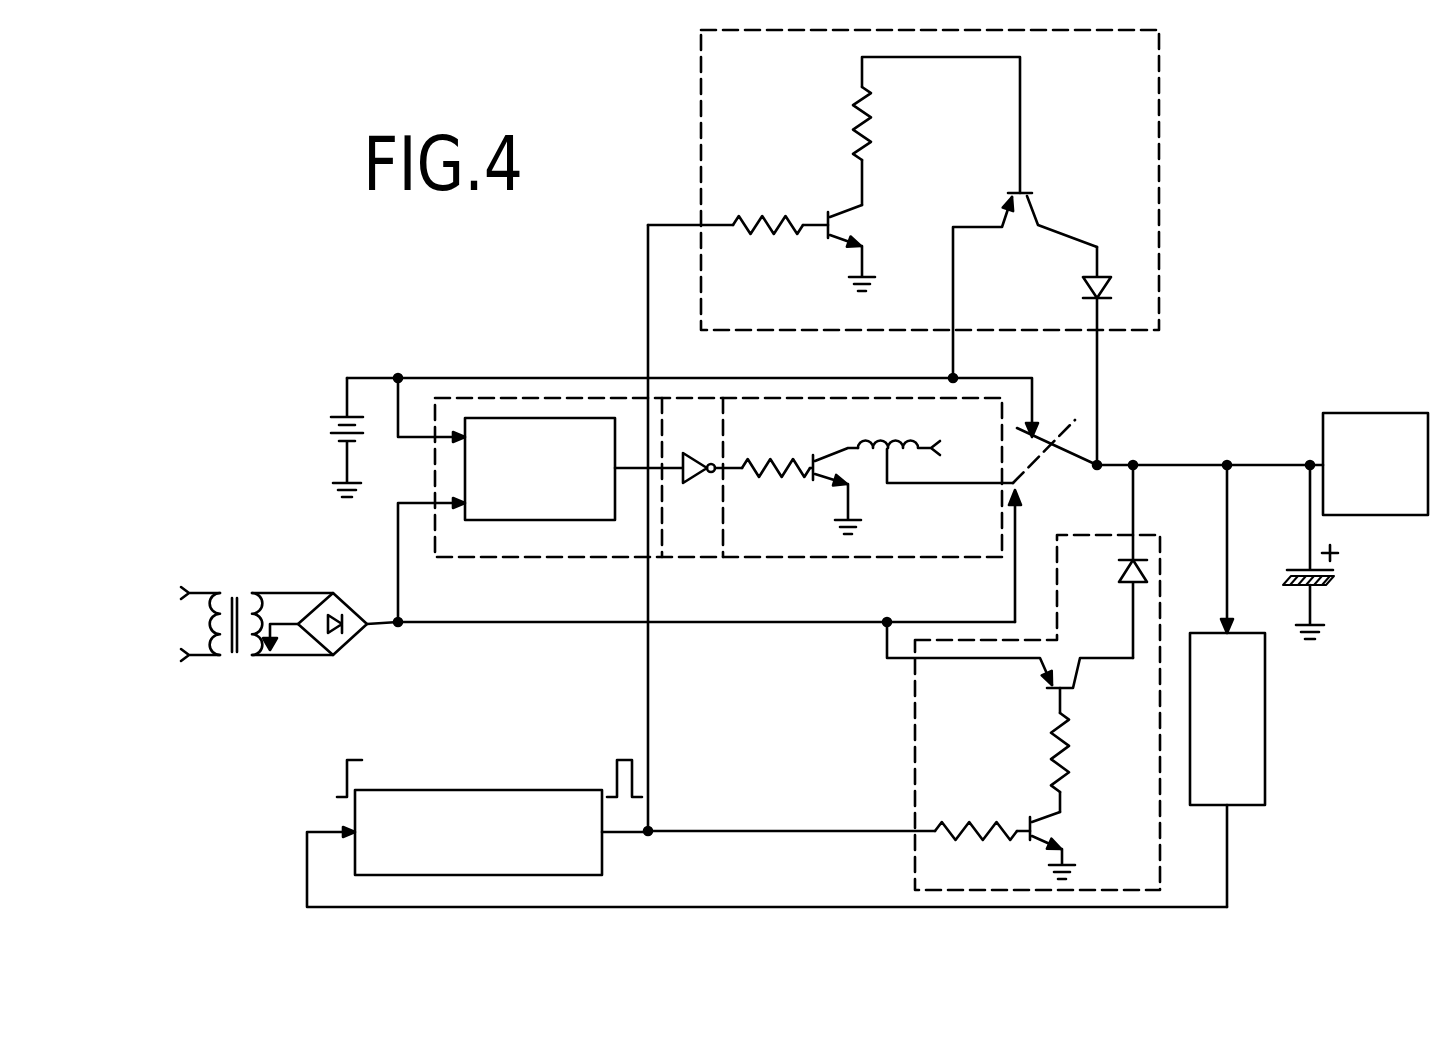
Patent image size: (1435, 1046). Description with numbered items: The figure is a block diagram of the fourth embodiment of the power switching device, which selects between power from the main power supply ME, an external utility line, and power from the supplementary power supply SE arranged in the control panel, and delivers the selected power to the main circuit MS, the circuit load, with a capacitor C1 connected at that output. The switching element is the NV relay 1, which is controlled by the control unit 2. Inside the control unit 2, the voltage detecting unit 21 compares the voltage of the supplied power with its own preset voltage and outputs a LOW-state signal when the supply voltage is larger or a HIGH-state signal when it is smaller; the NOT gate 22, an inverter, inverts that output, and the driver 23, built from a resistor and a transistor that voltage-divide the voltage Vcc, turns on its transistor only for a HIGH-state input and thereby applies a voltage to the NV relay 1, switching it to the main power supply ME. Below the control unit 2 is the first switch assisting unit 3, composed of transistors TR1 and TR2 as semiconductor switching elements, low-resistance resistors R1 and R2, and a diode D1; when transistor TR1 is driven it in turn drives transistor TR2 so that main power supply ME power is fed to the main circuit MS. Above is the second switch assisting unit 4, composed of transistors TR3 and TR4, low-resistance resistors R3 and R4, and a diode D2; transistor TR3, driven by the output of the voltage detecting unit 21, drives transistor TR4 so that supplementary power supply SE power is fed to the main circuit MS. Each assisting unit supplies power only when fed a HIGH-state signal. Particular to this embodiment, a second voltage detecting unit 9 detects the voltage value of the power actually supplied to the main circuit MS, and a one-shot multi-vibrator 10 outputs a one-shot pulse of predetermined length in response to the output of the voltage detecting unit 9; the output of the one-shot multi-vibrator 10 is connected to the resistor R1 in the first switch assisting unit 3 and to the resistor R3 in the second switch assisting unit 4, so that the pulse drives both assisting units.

The NV relay 1 is at (1052, 418).
The control unit 2 is at (710, 467).
The first switch assisting unit 3 is at (912, 785).
The second switch assisting unit 4 is at (1160, 140).
The second voltage detecting unit 9 is at (1298, 686).
The one-shot multi-vibrator 10 is at (455, 797).
The voltage detecting unit 21 is at (512, 423).
The NOT gate 22 is at (687, 458).
The driver 23 is at (788, 425).
The supplementary power supply SE is at (323, 435).
The main power supply ME is at (274, 669).
The main circuit MS is at (1375, 464).
The capacitor C1 is at (1325, 552).
The diode D1 is at (1115, 561).
The diode D2 is at (1079, 356).
The resistor R1 is at (839, 811).
The resistor R2 is at (1078, 750).
The resistor R3 is at (738, 208).
The resistor R4 is at (936, 131).
The transistor TR1 is at (1068, 845).
The transistor TR2 is at (1010, 663).
The transistor TR3 is at (868, 248).
The transistor TR4 is at (1025, 270).